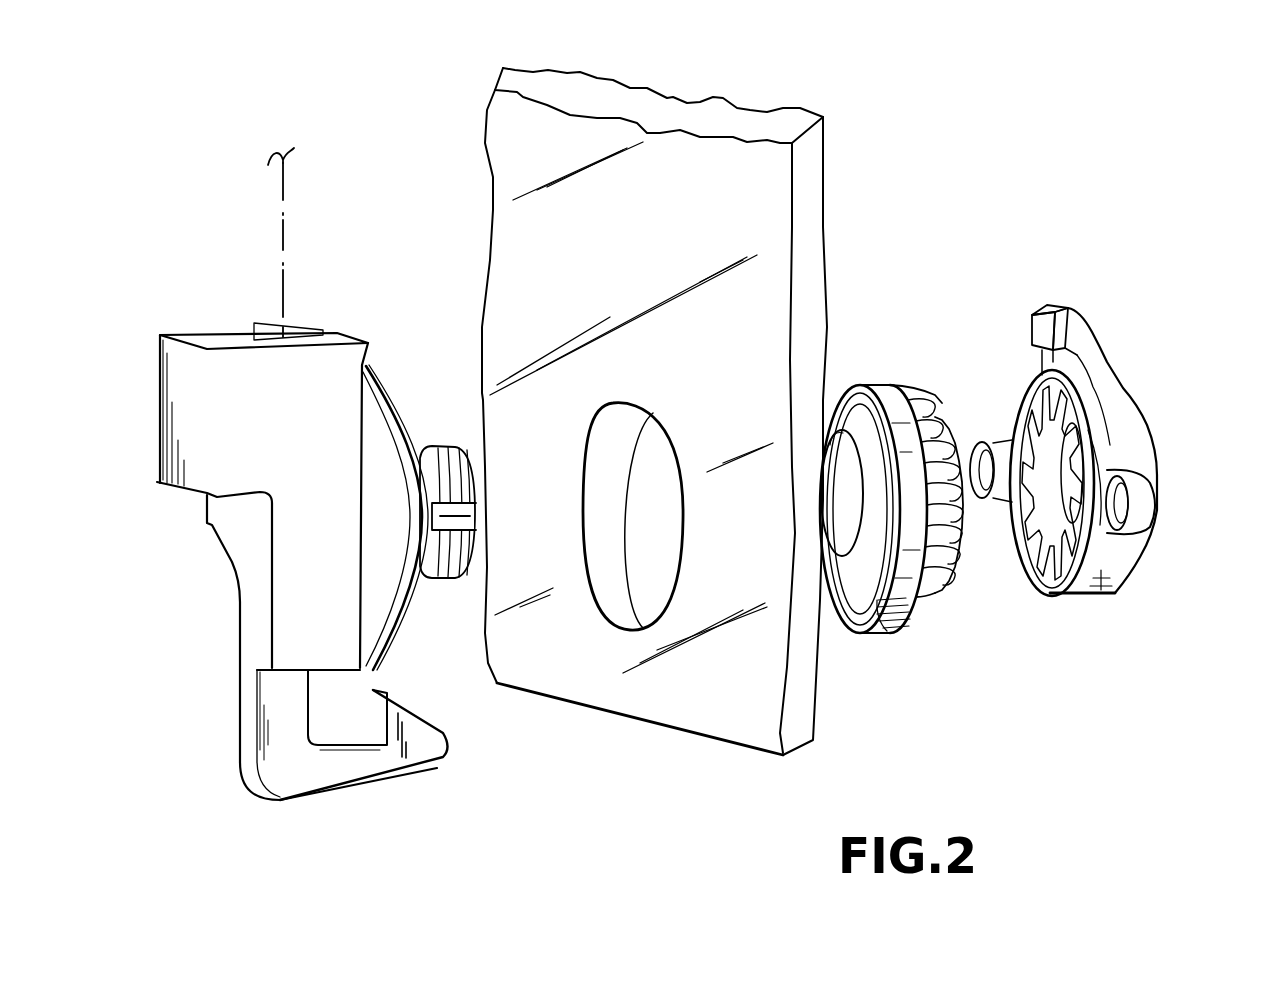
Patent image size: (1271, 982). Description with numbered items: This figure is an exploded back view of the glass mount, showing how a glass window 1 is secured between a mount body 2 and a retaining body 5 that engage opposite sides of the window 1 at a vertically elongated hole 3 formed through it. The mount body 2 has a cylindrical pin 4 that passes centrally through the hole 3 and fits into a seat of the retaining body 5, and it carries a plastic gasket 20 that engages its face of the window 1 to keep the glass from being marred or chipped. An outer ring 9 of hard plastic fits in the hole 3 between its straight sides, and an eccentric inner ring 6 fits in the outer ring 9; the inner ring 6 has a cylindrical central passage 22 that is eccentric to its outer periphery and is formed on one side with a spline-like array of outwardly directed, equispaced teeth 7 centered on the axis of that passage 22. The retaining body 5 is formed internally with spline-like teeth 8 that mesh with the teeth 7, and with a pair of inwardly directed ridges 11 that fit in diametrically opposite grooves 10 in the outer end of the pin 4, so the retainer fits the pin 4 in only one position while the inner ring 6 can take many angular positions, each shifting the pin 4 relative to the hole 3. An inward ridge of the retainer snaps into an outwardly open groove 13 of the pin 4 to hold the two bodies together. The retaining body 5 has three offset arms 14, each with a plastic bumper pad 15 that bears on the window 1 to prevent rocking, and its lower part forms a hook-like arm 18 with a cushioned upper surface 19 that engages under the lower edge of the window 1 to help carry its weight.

The glass window 1 is at (765, 196).
The mount body 2 is at (302, 525).
The hole 3 is at (655, 590).
The cylindrical pin 4 is at (425, 522).
The retaining body 5 is at (1105, 536).
The eccentric inner ring 6 is at (858, 582).
The teeth 7 is at (905, 521).
The spline-like teeth 8 is at (1052, 597).
The outer ring 9 is at (893, 600).
The grooves 10 is at (453, 443).
The ridges 11 is at (1073, 480).
The groove 13 is at (1073, 427).
The arms 14 is at (1143, 483).
The plastic bumper pad 15 is at (1113, 507).
The hook-like arm 18 is at (273, 722).
The cushioned upper surface 19 is at (356, 746).
The plastic gasket 20 is at (397, 383).
The central passage 22 is at (843, 433).